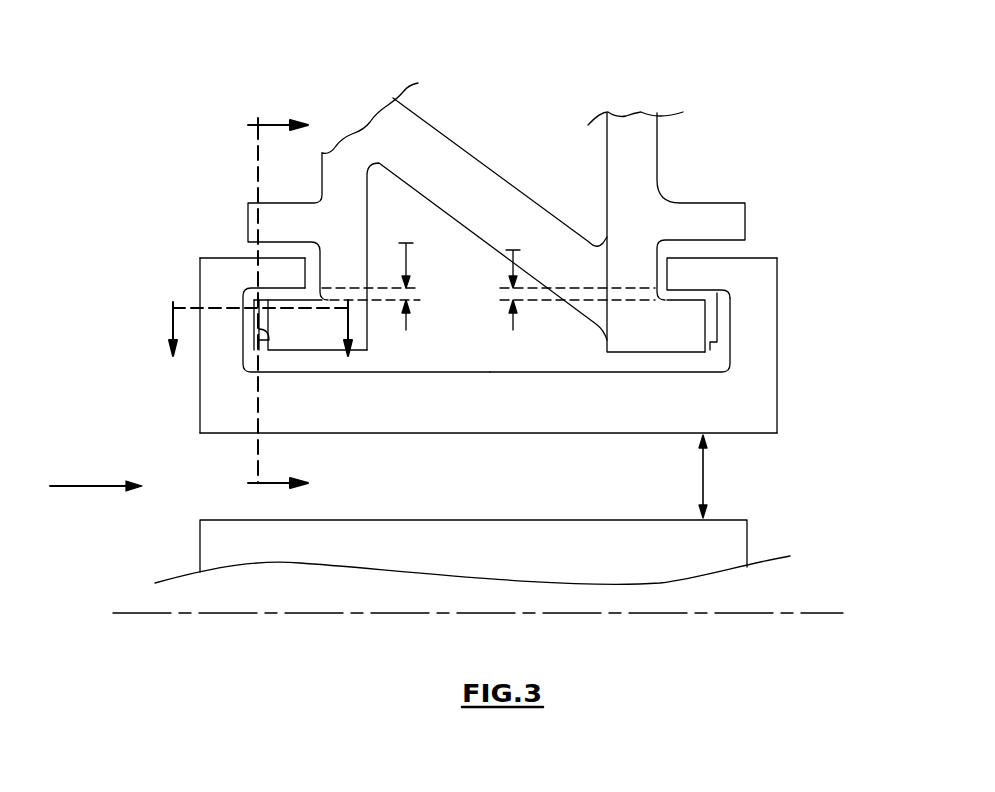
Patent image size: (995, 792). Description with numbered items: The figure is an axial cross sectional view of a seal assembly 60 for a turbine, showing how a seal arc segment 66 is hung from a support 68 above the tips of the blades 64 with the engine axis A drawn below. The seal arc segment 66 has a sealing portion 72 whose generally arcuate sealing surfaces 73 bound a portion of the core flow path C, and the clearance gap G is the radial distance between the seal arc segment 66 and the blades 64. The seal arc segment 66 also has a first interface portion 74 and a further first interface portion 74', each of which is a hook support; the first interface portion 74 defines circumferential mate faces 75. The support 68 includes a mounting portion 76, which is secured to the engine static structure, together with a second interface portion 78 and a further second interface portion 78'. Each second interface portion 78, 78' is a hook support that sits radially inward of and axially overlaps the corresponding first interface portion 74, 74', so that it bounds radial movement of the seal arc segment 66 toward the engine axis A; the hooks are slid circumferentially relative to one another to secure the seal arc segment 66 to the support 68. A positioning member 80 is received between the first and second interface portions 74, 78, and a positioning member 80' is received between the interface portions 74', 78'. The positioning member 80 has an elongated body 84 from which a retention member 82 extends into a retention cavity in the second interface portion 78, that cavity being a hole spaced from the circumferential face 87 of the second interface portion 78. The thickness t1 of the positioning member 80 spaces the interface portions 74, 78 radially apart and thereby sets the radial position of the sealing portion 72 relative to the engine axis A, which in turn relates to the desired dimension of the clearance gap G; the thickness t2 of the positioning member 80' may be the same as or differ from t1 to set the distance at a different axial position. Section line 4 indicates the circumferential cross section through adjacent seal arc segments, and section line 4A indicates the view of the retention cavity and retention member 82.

The seal assembly 60 is at (272, 66).
The blades 64 is at (200, 547).
The seal arc segment 66 is at (198, 338).
The support 68 is at (280, 202).
The sealing portion 72 is at (230, 433).
The sealing surfaces 73 is at (385, 433).
The first interface portion 74 is at (244, 226).
The first interface portion 74' is at (747, 260).
The circumferential mate faces 75 is at (212, 280).
The mounting portion 76 is at (412, 110).
The second interface portion 78 is at (356, 334).
The second interface portion 78' is at (621, 328).
The positioning member 80 is at (366, 291).
The positioning member 80' is at (660, 332).
The retention member 82 is at (272, 342).
The elongated body 84 is at (280, 302).
The circumferential face 87 is at (252, 322).
The section line 4- 4 is at (270, 304).
The section line 4A- 4A is at (245, 328).
The core flow path C is at (85, 488).
The thickness t1 is at (408, 252).
The thickness t2 is at (515, 252).
The clearance gap G is at (705, 478).
The engine axis A is at (815, 613).